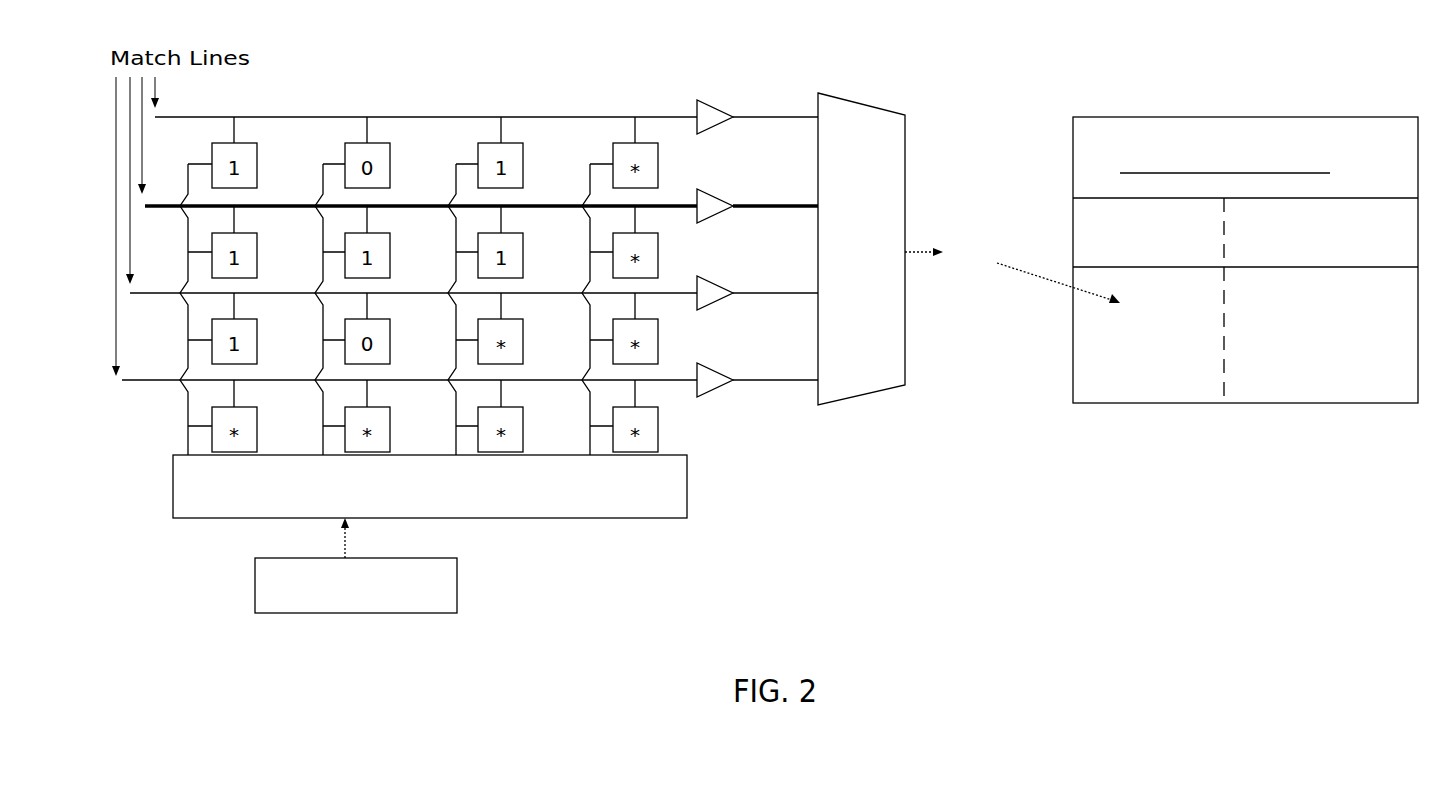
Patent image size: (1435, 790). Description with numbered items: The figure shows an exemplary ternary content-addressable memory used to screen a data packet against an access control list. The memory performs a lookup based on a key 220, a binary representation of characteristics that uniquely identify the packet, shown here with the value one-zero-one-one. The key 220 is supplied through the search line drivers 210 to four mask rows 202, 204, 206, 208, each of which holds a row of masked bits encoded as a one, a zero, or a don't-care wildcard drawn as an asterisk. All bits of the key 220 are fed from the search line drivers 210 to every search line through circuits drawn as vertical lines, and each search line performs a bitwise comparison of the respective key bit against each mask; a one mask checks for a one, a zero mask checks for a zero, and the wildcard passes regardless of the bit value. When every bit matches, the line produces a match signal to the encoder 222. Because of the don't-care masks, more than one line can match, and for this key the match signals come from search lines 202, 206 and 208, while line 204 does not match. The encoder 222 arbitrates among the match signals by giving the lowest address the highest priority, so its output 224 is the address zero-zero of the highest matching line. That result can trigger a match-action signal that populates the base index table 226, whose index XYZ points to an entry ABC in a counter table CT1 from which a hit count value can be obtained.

The mask row 202 is at (95, 126).
The mask row 204 is at (95, 211).
The mask row 206 is at (95, 299).
The mask row 208 is at (95, 389).
The search line drivers 210 is at (155, 499).
The key 220 is at (240, 594).
The encoder 222 is at (900, 91).
The output 224 is at (988, 297).
The base index table 226 is at (1370, 173).